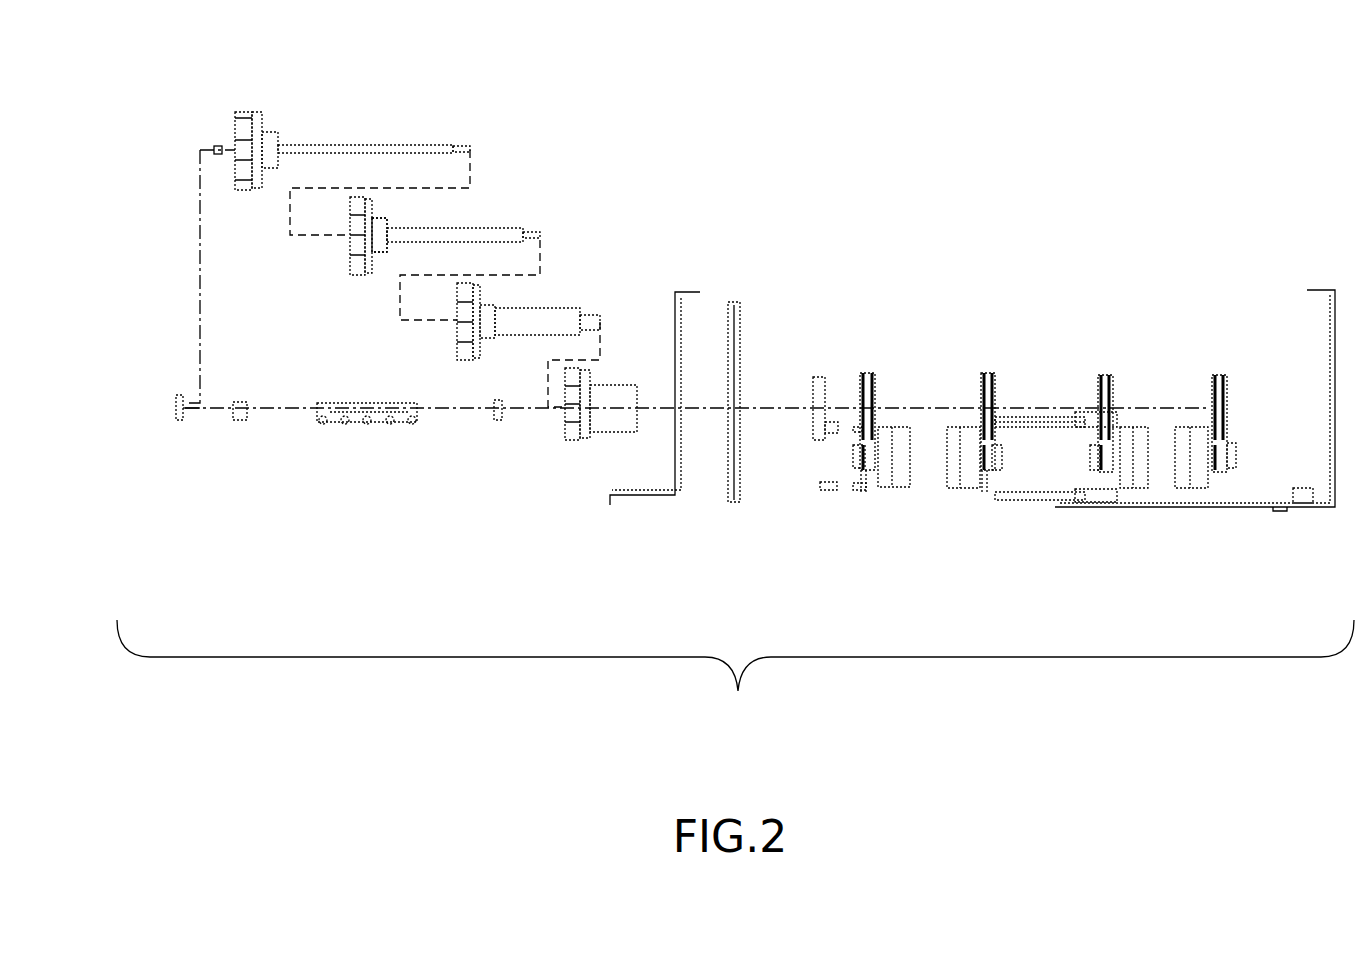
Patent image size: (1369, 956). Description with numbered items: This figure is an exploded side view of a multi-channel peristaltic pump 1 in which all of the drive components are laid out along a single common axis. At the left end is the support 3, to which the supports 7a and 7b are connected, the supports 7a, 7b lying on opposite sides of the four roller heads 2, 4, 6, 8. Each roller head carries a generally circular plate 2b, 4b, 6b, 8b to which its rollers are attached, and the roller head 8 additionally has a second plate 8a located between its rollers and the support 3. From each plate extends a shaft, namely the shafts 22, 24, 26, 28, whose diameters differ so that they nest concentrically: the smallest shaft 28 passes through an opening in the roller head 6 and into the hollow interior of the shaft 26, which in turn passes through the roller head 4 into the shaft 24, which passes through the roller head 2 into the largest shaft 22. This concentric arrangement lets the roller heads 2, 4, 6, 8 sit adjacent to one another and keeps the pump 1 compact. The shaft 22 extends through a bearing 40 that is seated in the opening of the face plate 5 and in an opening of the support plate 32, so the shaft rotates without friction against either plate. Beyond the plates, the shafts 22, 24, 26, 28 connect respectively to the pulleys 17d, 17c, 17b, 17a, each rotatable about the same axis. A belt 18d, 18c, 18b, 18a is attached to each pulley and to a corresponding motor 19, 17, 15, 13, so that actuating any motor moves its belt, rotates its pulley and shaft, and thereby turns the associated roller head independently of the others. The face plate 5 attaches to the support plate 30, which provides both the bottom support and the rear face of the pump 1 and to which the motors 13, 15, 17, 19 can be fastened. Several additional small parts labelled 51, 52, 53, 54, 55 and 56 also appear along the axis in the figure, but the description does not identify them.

The multi-channel peristaltic pump 1 is at (735, 674).
The roller head 2 is at (573, 442).
The plate 2b is at (585, 372).
The support 3 is at (178, 418).
The roller head 4 is at (468, 360).
The plate 4b is at (478, 285).
The face plate 5 is at (673, 495).
The roller head 6 is at (360, 275).
The plate 6b is at (372, 195).
The support 7a is at (368, 424).
The support 7b is at (332, 404).
The roller head 8 is at (252, 188).
The second plate 8a is at (240, 112).
The plate 8b is at (258, 112).
The motor 13 is at (1190, 488).
The motor 15 is at (1133, 488).
The motor 17 is at (962, 488).
The pulley 17a is at (1223, 375).
The pulley 17b is at (1108, 375).
The pulley 17c is at (985, 375).
The pulley 17d is at (873, 378).
The belt 18a is at (1226, 470).
The belt 18b is at (1105, 472).
The belt 18c is at (990, 470).
The belt 18d is at (862, 460).
The motor 19 is at (890, 482).
The shaft 22 is at (612, 406).
The shaft 24 is at (565, 312).
The shaft 26 is at (455, 232).
The shaft 28 is at (372, 147).
The support plate 30 is at (1330, 508).
The support plate 32 is at (735, 502).
The bearing 40 is at (830, 422).
The bushing 51 is at (1083, 412).
The pin 52 is at (832, 422).
The pin 53 is at (855, 427).
The shaft 54 is at (1005, 416).
The collar 55 is at (240, 420).
The collar 56 is at (498, 420).